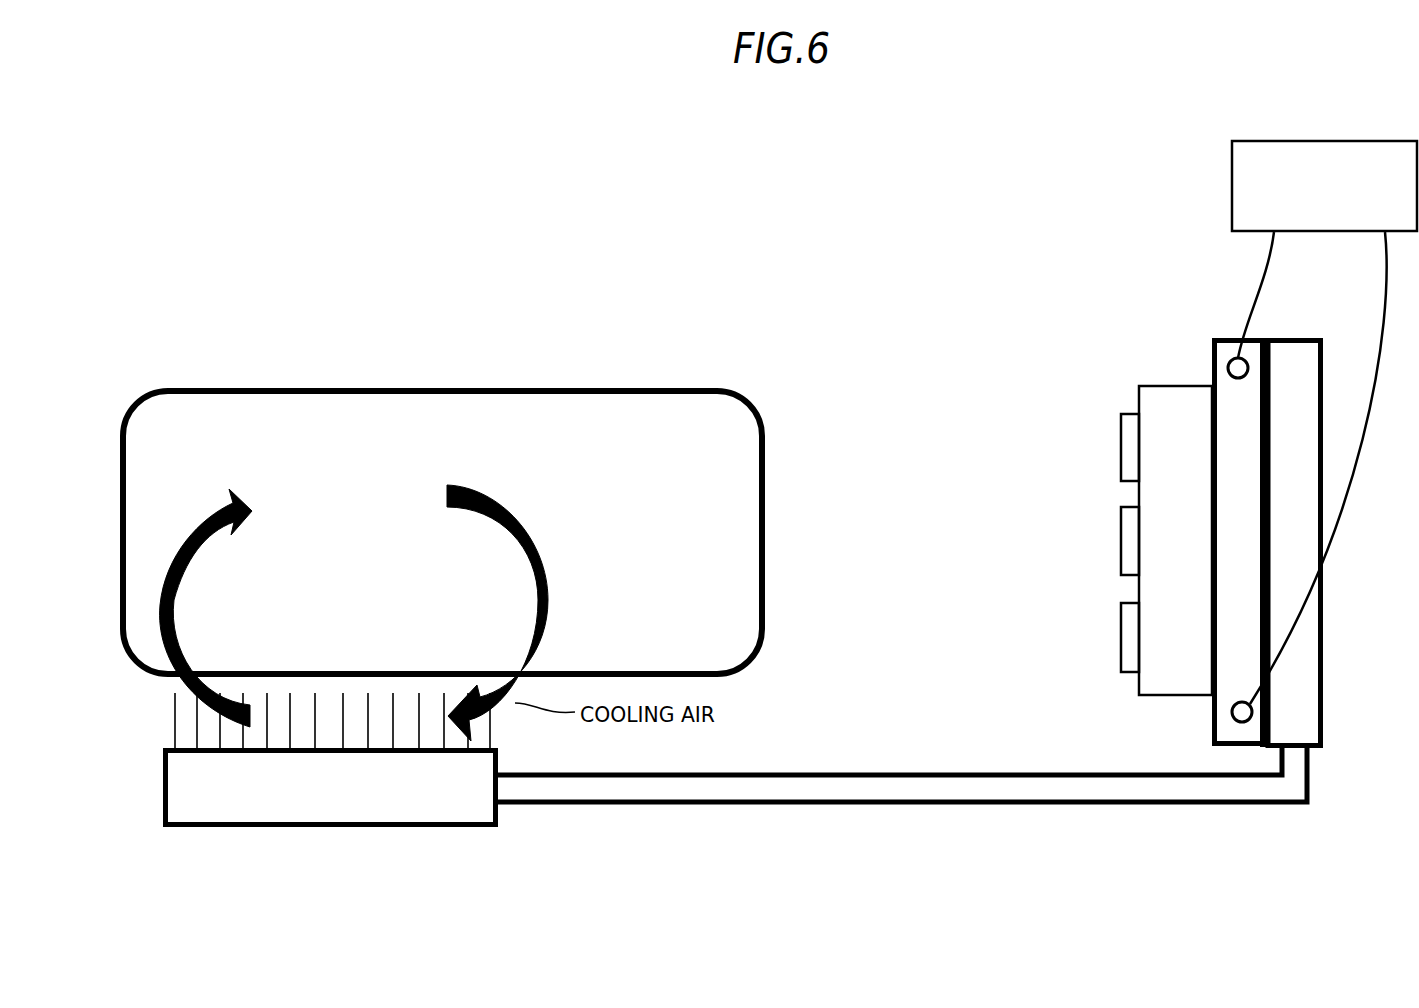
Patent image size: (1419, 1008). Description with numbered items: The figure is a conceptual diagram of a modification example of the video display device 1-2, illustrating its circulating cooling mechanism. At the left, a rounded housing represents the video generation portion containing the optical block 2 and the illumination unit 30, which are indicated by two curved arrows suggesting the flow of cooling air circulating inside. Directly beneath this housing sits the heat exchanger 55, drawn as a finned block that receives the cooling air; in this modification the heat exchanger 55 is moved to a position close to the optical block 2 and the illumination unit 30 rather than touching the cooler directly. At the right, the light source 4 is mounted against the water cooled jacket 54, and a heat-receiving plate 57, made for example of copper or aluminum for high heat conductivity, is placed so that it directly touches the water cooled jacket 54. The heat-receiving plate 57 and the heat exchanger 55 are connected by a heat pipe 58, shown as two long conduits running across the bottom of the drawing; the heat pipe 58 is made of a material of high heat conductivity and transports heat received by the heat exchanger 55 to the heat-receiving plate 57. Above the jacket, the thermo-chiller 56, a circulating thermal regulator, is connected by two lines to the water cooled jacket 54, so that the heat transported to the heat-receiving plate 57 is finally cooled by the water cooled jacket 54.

The video display device 1-2 is at (422, 195).
The optical block 2 is at (188, 522).
The illumination unit 30 is at (505, 498).
The light source 4 is at (1140, 385).
The water cooled jacket 54 is at (1220, 338).
The heat exchanger 55 is at (300, 827).
The thermo-chiller 56 is at (1313, 139).
The heat-receiving plate 57 is at (1326, 692).
The heat pipe 58 is at (848, 805).